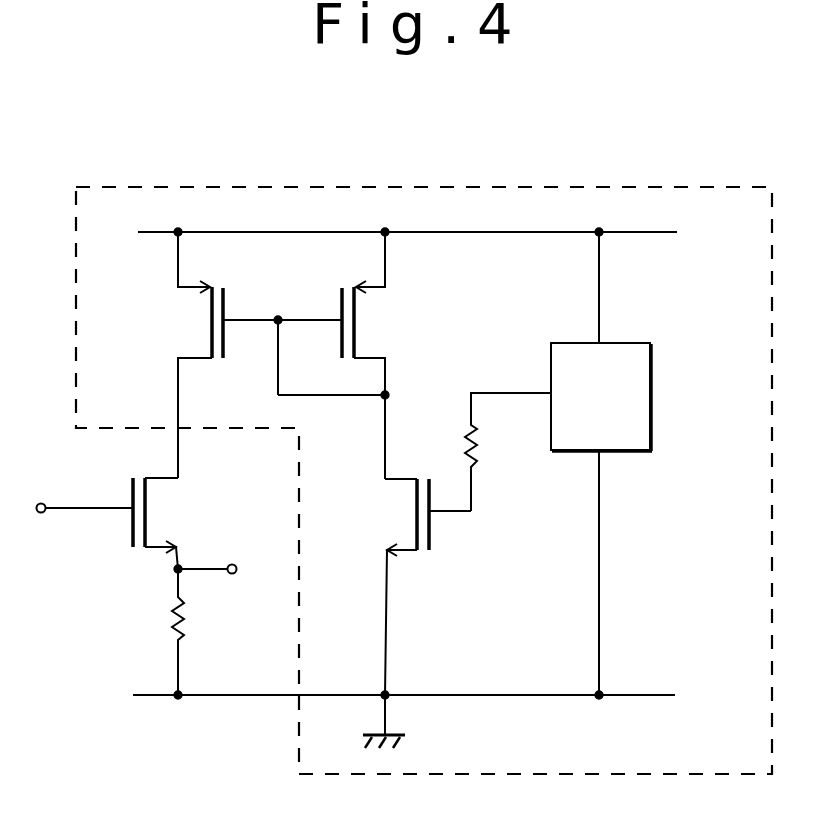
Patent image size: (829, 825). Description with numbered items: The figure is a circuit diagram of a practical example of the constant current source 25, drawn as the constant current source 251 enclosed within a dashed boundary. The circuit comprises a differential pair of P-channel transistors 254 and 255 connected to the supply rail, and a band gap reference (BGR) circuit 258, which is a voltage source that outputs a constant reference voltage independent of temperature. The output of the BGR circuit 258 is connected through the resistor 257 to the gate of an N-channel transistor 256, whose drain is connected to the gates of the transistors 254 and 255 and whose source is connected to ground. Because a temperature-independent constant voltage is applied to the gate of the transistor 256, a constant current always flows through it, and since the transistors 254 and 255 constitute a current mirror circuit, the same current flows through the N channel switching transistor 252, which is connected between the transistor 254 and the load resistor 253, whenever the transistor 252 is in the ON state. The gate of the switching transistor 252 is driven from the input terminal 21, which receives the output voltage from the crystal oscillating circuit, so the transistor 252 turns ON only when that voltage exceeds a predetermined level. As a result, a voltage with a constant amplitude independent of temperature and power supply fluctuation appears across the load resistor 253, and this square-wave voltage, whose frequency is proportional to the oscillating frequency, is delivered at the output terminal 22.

The constant current source 25 is at (407, 153).
The constant current source 251 is at (612, 187).
The N channel switching transistor 252 is at (157, 508).
The load resistor 253 is at (180, 636).
The P-channel transistor 254 is at (205, 318).
The P-channel transistor 255 is at (365, 318).
The N-channel transistor 256 is at (402, 512).
The resistor 257 is at (474, 462).
The band gap reference (BGR) circuit 258 is at (653, 366).
The input terminal 21 is at (41, 513).
The output terminal 22 is at (236, 572).